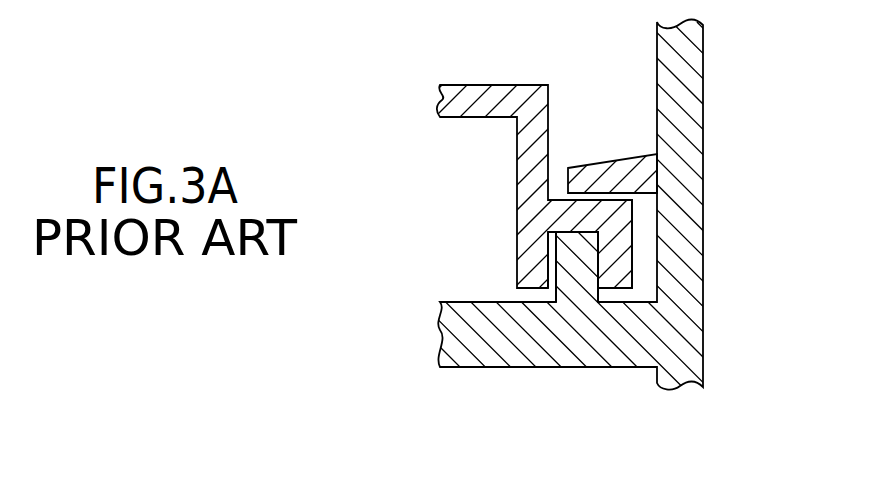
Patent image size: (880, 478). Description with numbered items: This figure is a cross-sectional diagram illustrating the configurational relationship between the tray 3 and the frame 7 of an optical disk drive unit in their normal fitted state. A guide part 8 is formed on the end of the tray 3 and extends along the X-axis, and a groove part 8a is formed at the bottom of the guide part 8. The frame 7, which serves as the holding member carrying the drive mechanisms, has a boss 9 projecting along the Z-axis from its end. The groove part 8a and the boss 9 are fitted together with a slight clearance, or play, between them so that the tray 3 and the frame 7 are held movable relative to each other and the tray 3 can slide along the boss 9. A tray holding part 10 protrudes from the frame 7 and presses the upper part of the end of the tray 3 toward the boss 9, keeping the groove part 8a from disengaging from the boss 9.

The tray 3 is at (518, 157).
The frame 7 is at (703, 242).
The guide part 8 is at (612, 208).
The groove part 8a is at (552, 259).
The boss 9 is at (577, 288).
The tray holding part 10 is at (612, 168).